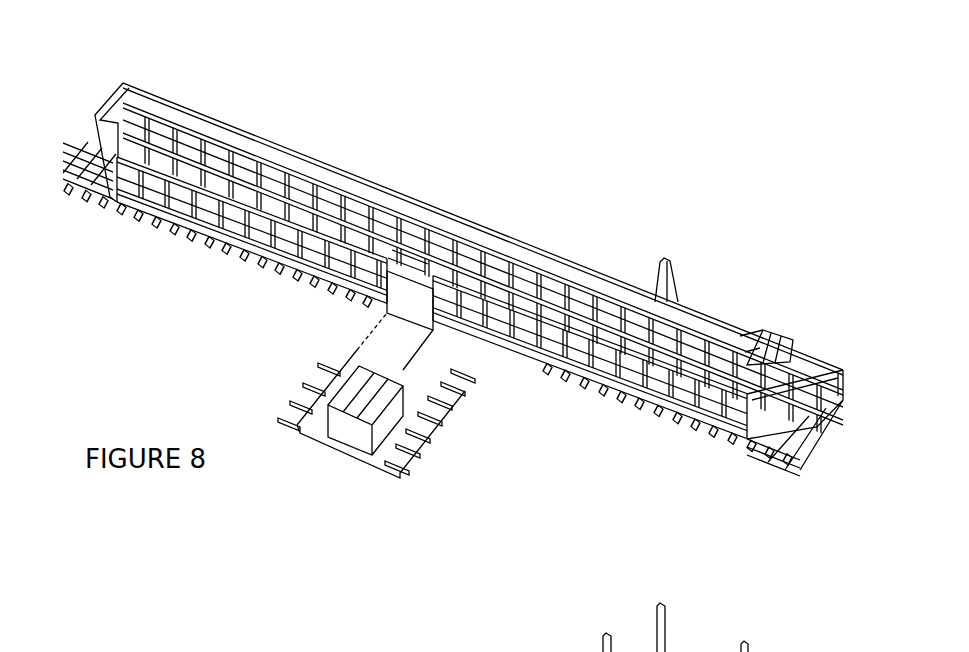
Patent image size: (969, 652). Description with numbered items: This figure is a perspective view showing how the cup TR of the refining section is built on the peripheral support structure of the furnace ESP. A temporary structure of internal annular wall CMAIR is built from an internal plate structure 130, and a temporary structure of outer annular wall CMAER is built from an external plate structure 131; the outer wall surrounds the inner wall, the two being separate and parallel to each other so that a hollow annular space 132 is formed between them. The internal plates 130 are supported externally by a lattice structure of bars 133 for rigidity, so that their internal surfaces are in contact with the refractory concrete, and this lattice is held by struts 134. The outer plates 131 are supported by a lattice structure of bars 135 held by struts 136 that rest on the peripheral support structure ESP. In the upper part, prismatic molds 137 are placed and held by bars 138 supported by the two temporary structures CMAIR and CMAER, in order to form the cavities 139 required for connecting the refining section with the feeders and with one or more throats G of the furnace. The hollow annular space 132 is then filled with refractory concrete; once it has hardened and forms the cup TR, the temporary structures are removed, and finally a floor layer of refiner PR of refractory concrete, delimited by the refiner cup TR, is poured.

The cup of the refining section TR is at (86, 112).
The prismatic molds 137 is at (159, 110).
The internal plate structure 130 is at (188, 128).
The temporary structure of internal annular wall CMAIR is at (264, 157).
The struts 134 is at (287, 202).
The external plate structure 131 is at (483, 221).
The floor layer of refiner PR is at (488, 298).
The hollow annular space 132 is at (537, 262).
The struts 136 is at (674, 280).
The cavities 139 is at (745, 339).
The bars 138 is at (768, 324).
The lattice structure of bars 133 is at (228, 162).
The lattice structure of bars 135 is at (428, 281).
The throats of the furnace G is at (378, 350).
The temporary structure of outer annular wall CMAER is at (548, 360).
The peripheral support structure of the furnace ESP is at (657, 436).